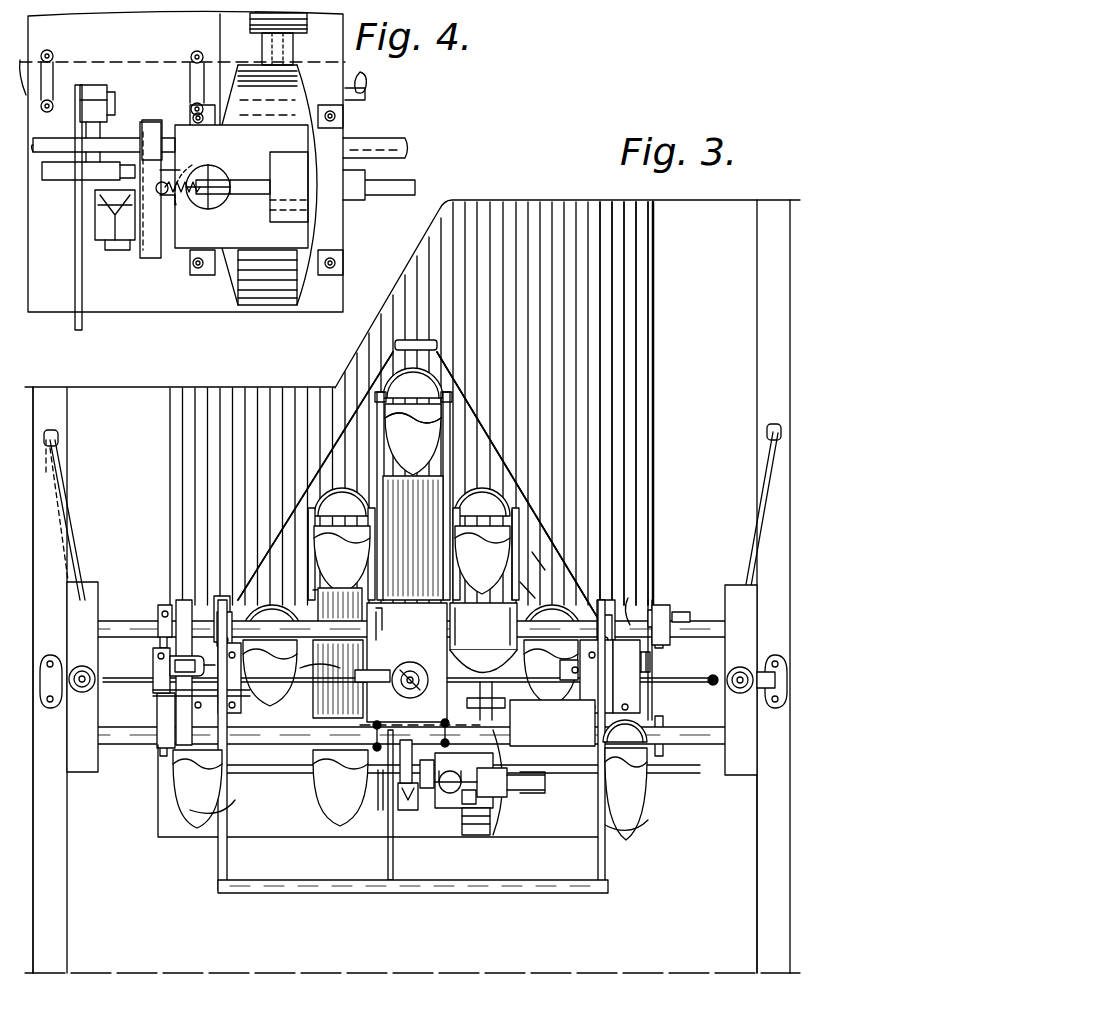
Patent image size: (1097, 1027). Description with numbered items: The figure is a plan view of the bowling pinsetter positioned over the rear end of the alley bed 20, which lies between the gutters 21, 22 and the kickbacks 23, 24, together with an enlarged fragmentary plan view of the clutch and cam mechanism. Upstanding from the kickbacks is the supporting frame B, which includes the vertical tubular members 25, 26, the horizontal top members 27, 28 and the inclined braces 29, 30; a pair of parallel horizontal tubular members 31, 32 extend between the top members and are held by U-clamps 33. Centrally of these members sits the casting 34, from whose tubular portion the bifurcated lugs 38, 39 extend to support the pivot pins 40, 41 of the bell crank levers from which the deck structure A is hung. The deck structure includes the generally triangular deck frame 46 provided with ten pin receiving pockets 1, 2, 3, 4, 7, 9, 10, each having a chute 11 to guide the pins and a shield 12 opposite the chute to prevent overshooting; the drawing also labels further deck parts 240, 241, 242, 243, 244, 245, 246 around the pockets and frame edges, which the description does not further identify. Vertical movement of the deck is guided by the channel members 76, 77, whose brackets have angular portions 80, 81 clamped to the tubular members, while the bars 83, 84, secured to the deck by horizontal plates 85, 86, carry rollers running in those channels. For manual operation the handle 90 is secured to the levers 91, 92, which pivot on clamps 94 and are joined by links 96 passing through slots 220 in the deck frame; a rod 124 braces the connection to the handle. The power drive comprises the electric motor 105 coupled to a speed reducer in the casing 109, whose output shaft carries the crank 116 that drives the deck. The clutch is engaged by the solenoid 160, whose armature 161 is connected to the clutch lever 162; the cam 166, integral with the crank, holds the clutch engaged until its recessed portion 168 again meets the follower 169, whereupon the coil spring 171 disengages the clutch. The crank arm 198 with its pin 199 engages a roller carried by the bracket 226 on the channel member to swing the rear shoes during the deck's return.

In FIG. 3, the pin receiving pocket 1 is at (416, 400).
In FIG. 3, the pin receiving pocket 2 is at (488, 529).
In FIG. 3, the pin receiving pocket 3 is at (348, 529).
In FIG. 3, the pin receiving pocket 4 is at (300, 630).
In FIG. 3, the pin receiving pocket 7 is at (627, 756).
In FIG. 3, the pin receiving pocket 9 is at (342, 762).
In FIG. 3, the pin receiving pocket 10 is at (205, 764).
In FIG. 3, the chute 11 is at (432, 458).
In FIG. 3, the shield 12 is at (432, 378).
In FIG. 3, the bowling alley bed 20 is at (635, 492).
In FIG. 3, the gutter 21 is at (140, 531).
In FIG. 3, the gutter 22 is at (720, 531).
In FIG. 3, the kickback 23 is at (55, 853).
In FIG. 3, the kickback 24 is at (760, 872).
In FIG. 3, the vertical tubular member 25 is at (45, 660).
In FIG. 3, the vertical tubular member 26 is at (358, 600).
In FIG. 3, the horizontal top member 27 is at (92, 705).
In FIG. 3, the horizontal top member 28 is at (755, 642).
In FIG. 3, the inclined brace 29 is at (68, 506).
In FIG. 3, the inclined brace 30 is at (750, 560).
In FIG. 3, the horizontal tubular member 31 is at (128, 748).
In FIG. 4, the horizontal tubular member 32 is at (366, 92).
In FIG. 3, the horizontal tubular member 32 is at (122, 624).
In FIG. 3, the U-clamp 33 is at (92, 636).
In FIG. 4, the casting 34 is at (150, 54).
In FIG. 3, the casting 34 is at (418, 636).
In FIG. 3, the bifurcated lug 38 is at (360, 670).
In FIG. 3, the bifurcated lug 39 is at (447, 664).
In FIG. 3, the pivot pin 40 is at (335, 680).
In FIG. 3, the pivot pin 41 is at (466, 702).
In FIG. 3, the deck frame 46 is at (537, 552).
In FIG. 3, the channel member 76 is at (166, 604).
In FIG. 3, the channel member 77 is at (660, 672).
In FIG. 3, the angular portion 80 is at (153, 662).
In FIG. 3, the angular portion 81 is at (660, 605).
In FIG. 3, the bar 83 is at (185, 640).
In FIG. 3, the bar 84 is at (608, 692).
In FIG. 3, the horizontal plate 85 is at (226, 716).
In FIG. 3, the horizontal plate 86 is at (578, 716).
In FIG. 3, the handle 90 is at (435, 893).
In FIG. 3, the lever 91 is at (228, 858).
In FIG. 3, the lever 92 is at (598, 858).
In FIG. 3, the clamp 94 is at (222, 612).
In FIG. 3, the link 96 is at (222, 795).
In FIG. 3, the electric motor 105 is at (492, 638).
In FIG. 4, the casing 109 is at (275, 300).
In FIG. 3, the casing 109 is at (478, 836).
In FIG. 4, the crank 116 is at (147, 258).
In FIG. 3, the crank 116 is at (410, 810).
In FIG. 4, the rod 124 is at (82, 280).
In FIG. 3, the rod 124 is at (298, 775).
In FIG. 4, the electric solenoid 160 is at (283, 165).
In FIG. 3, the electric solenoid 160 is at (505, 812).
In FIG. 4, the armature 161 is at (242, 178).
In FIG. 3, the armature 161 is at (451, 773).
In FIG. 3, the clutch lever 162 is at (462, 798).
In FIG. 4, the cam 166 is at (155, 120).
In FIG. 4, the recessed portion 168 is at (140, 160).
In FIG. 3, the recessed portion 168 is at (425, 756).
In FIG. 4, the follower 169 is at (182, 195).
In FIG. 4, the coil spring 171 is at (200, 165).
In FIG. 3, the crank arm 198 is at (630, 598).
In FIG. 3, the pin 199 is at (680, 612).
In FIG. 3, the slot 220 is at (210, 625).
In FIG. 3, the bracket 226 is at (652, 660).
In FIG. 3, the diagonal brace 240 is at (452, 478).
In FIG. 3, the diagonal brace 241 is at (452, 400).
In FIG. 3, the tube 242 is at (400, 492).
In FIG. 3, the post 243 is at (322, 562).
In FIG. 3, the link 244 is at (316, 586).
In FIG. 3, the post 245 is at (505, 512).
In FIG. 3, the brace 246 is at (528, 580).
In FIG. 3, the deck structure A is at (155, 822).
In FIG. 3, the supporting frame B is at (110, 770).